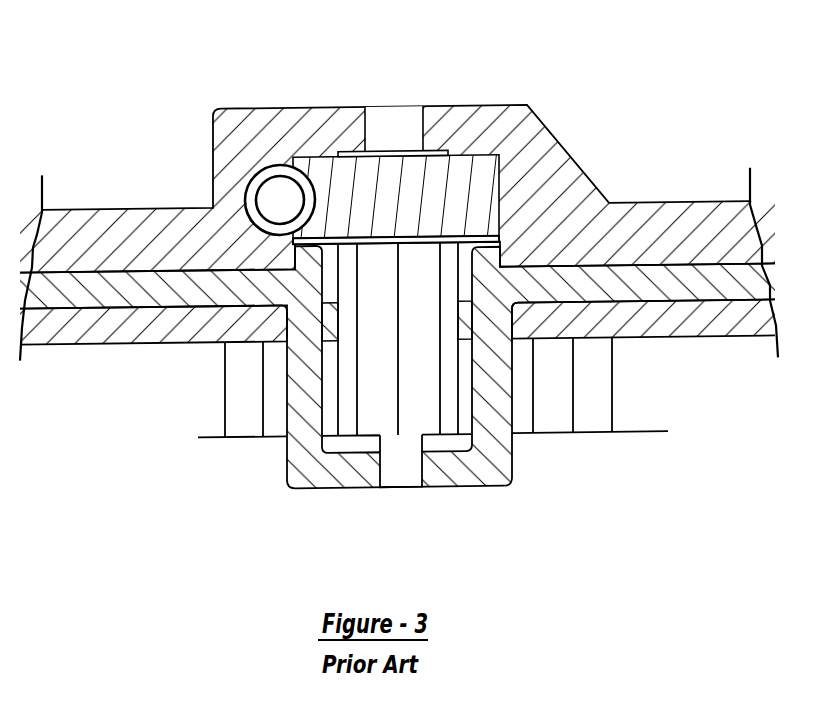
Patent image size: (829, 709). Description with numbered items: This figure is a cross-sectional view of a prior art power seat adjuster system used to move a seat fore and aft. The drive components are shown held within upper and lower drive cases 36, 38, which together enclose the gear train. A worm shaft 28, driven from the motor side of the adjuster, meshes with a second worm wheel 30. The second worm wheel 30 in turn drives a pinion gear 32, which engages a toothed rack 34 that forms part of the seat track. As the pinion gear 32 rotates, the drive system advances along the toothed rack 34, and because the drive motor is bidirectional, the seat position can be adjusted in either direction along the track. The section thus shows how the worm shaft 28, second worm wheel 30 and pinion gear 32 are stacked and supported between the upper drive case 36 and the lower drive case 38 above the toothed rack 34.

The worm shaft 28 is at (278, 200).
The second worm wheel 30 is at (455, 193).
The pinion gear 32 is at (400, 361).
The toothed rack 34 is at (573, 383).
The upper drive case 36 is at (576, 162).
The lower drive case 38 is at (490, 475).